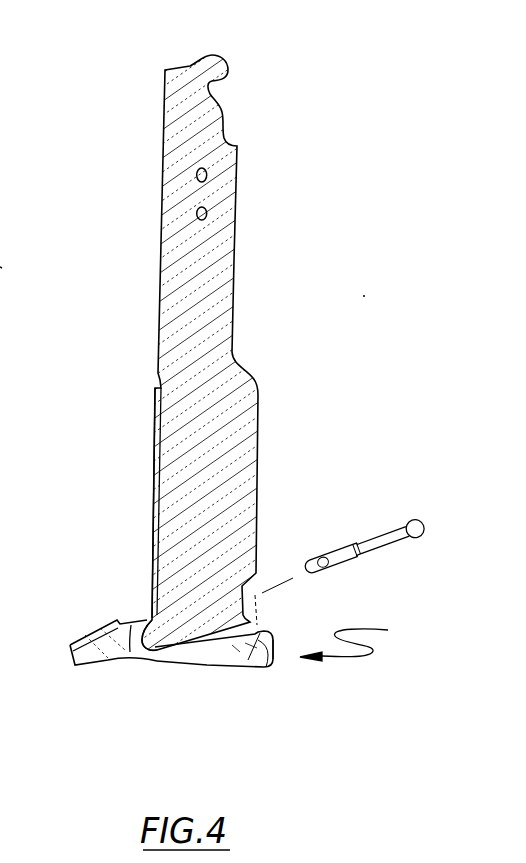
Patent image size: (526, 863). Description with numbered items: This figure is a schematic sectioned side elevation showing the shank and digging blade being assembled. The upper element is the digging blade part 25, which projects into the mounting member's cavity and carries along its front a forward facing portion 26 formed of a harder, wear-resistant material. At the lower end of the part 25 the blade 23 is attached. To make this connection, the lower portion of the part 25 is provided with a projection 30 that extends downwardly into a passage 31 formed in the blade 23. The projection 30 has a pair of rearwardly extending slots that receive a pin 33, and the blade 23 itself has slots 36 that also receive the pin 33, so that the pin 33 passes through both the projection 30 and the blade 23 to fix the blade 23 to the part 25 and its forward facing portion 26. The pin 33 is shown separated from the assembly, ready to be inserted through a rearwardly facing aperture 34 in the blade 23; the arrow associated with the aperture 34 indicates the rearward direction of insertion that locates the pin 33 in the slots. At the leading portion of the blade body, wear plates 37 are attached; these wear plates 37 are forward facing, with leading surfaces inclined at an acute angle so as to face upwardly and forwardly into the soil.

The blade 23 is at (110, 663).
The digging blade part 25 is at (258, 430).
The forward facing portion 26 is at (152, 478).
The projection 30 is at (155, 636).
The passage 31 is at (213, 648).
The pin 33 is at (410, 518).
The rearwardly facing aperture 34 is at (360, 636).
The slots 36 is at (269, 668).
The wear plates 37 is at (85, 637).